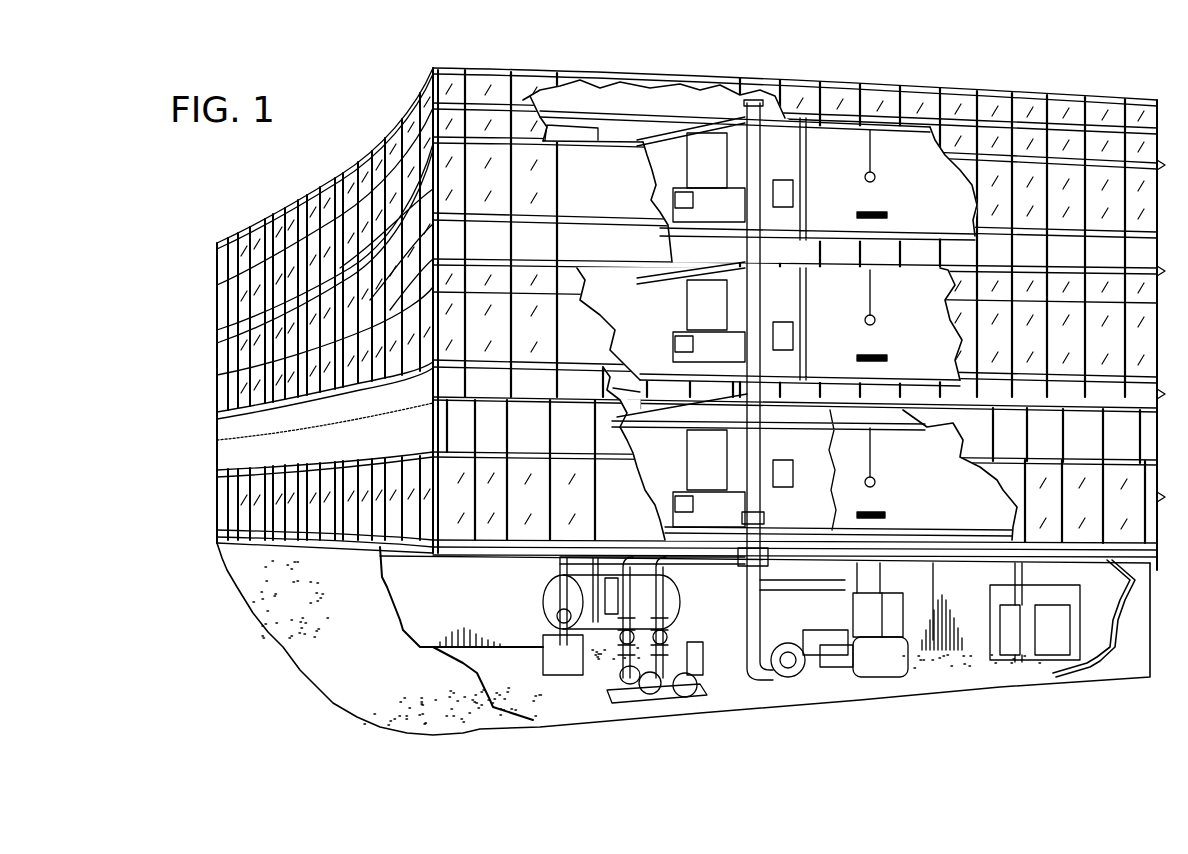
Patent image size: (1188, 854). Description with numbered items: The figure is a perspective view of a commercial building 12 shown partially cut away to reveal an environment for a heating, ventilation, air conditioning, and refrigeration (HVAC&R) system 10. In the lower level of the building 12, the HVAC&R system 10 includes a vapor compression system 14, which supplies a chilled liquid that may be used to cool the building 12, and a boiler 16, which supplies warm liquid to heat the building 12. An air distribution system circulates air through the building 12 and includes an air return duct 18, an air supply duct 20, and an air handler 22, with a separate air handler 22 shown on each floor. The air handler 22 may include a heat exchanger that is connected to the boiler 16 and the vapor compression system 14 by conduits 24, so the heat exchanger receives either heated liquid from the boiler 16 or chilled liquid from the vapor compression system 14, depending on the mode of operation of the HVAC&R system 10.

The HVAC&R system 10 is at (949, 710).
The building 12 is at (1030, 95).
The vapor compression system 14 is at (863, 669).
The boiler 16 is at (547, 600).
The air return duct 18 is at (672, 358).
The air supply duct 20 is at (727, 123).
The air handler 22 is at (707, 330).
The conduits 24 is at (757, 517).